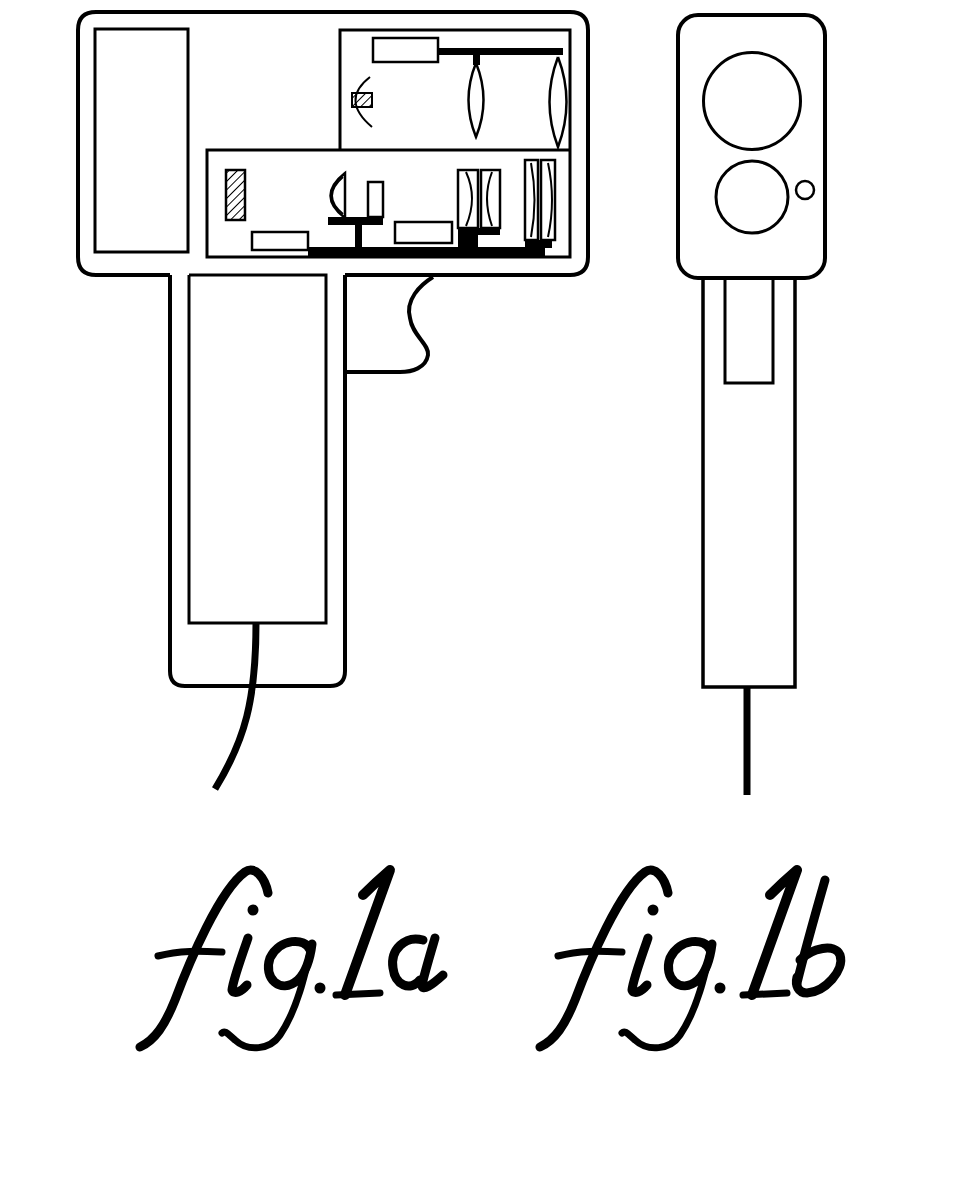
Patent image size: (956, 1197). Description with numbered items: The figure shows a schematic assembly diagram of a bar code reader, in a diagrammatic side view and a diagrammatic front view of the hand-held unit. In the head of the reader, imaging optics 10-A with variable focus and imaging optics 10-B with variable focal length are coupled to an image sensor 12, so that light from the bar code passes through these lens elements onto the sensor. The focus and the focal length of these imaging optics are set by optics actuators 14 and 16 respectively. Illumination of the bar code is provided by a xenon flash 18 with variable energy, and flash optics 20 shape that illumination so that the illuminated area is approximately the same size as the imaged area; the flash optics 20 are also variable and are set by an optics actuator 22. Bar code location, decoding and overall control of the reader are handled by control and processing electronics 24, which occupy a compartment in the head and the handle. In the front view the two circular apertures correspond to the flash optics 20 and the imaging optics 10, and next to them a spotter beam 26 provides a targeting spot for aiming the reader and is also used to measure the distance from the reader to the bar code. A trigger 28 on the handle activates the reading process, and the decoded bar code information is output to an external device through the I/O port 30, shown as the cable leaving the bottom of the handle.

In FIG. 1B, the imaging optics 10 is at (777, 222).
In FIG. 1A, the imaging optics with variable focus 10-A is at (323, 197).
In FIG. 1A, the imaging optics with variable focal length 10-B is at (497, 172).
In FIG. 1A, the image sensor 12 is at (246, 197).
In FIG. 1A, the optics actuator 14 is at (299, 231).
In FIG. 1A, the optics actuator 16 is at (432, 222).
In FIG. 1A, the xenon flash 18 is at (371, 111).
In FIG. 1A, the flash optics 20 is at (548, 97).
In FIG. 1B, the flash optics 20 is at (800, 106).
In FIG. 1A, the optics actuator 22 is at (398, 63).
In FIG. 1A, the control and processing electronics 24 is at (126, 96).
In FIG. 1B, the spotter beam 26 is at (815, 188).
In FIG. 1A, the trigger 28 is at (410, 323).
In FIG. 1B, the trigger 28 is at (773, 333).
In FIG. 1A, the I/O port 30 is at (257, 721).
In FIG. 1B, the I/O port 30 is at (745, 728).